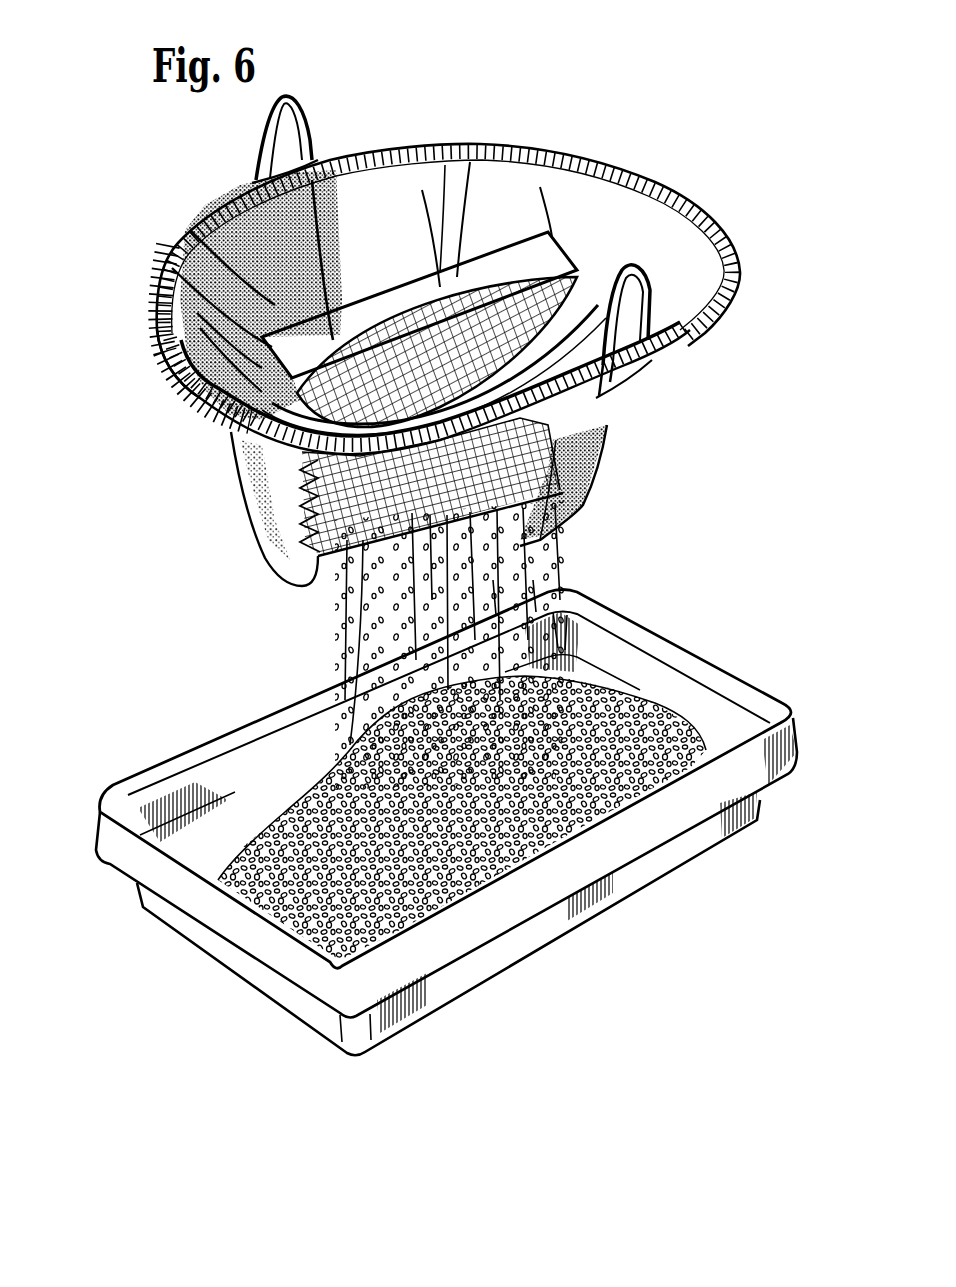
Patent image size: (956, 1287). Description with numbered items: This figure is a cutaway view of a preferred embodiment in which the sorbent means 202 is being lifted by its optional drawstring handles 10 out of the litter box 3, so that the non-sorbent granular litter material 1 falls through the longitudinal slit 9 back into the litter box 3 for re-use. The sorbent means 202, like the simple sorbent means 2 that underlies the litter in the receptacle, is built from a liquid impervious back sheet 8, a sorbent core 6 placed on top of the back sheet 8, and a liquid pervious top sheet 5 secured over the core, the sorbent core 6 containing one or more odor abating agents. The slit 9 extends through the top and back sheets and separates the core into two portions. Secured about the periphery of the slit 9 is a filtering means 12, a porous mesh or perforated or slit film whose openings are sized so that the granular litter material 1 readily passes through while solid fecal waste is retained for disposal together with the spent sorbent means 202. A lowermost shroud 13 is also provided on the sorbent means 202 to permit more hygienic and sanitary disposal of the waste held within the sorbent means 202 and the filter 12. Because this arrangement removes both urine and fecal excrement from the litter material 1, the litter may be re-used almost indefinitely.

The non-sorbent granular litter material 1 is at (407, 883).
The sorbent means 2 is at (418, 138).
The litter box 3 is at (657, 872).
The liquid pervious top sheet 5 is at (225, 200).
The sorbent core 6 is at (607, 262).
The liquid impervious back sheet 8 is at (640, 380).
The longitudinal slit 9 is at (158, 348).
The drawstring handles 10 is at (703, 338).
The filtering means 12 is at (580, 508).
The lowermost shroud 13 is at (595, 448).
The sorbent means 202 is at (723, 111).